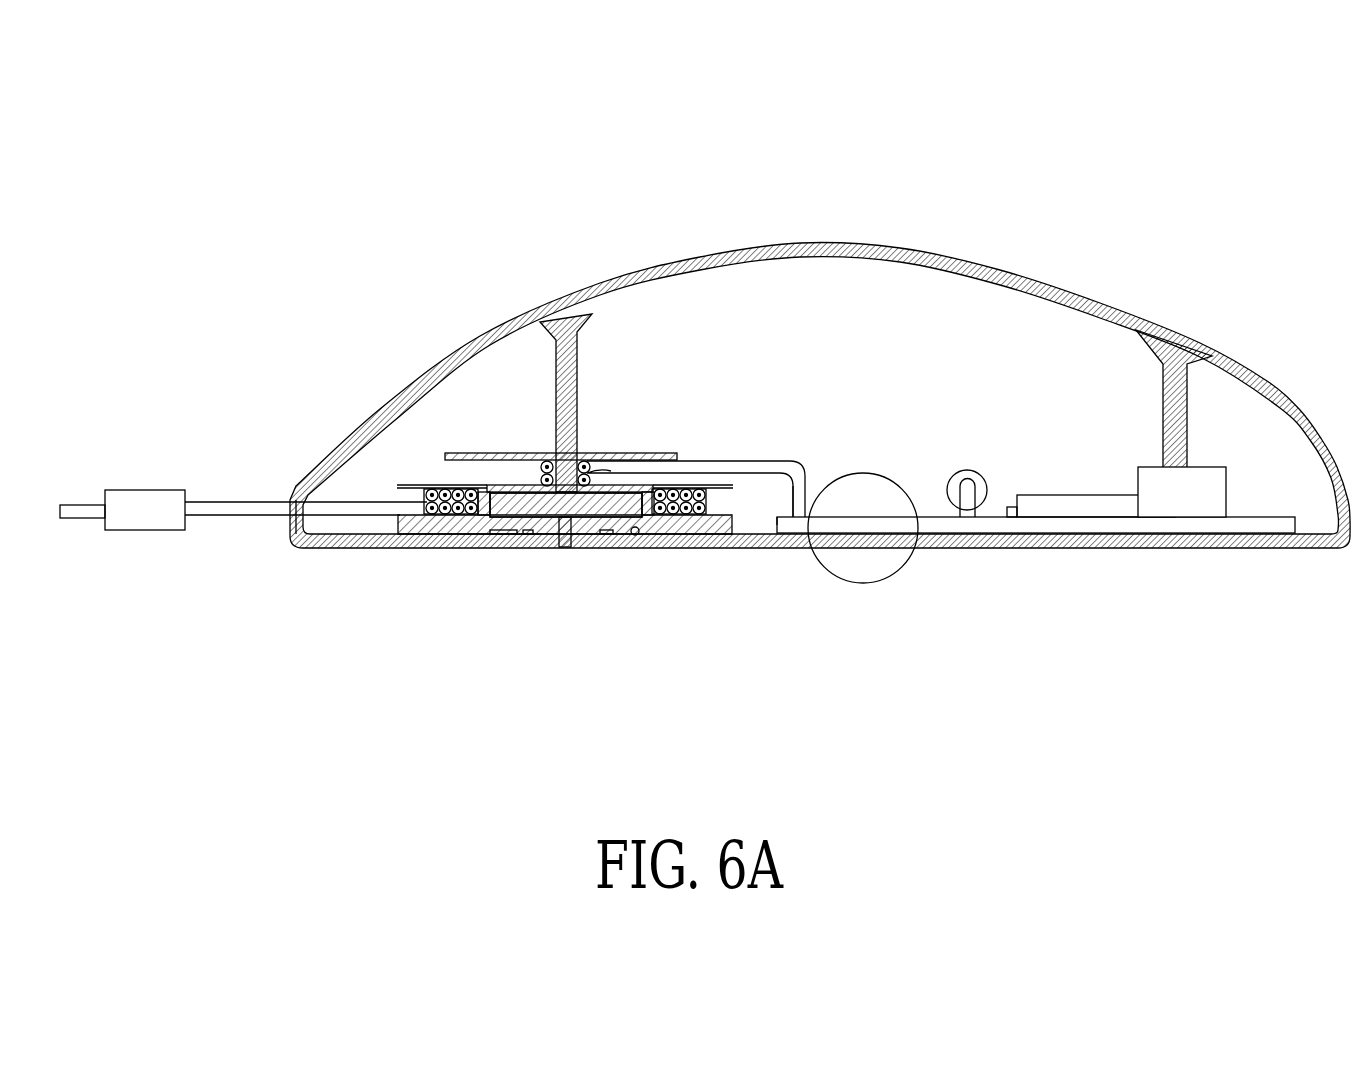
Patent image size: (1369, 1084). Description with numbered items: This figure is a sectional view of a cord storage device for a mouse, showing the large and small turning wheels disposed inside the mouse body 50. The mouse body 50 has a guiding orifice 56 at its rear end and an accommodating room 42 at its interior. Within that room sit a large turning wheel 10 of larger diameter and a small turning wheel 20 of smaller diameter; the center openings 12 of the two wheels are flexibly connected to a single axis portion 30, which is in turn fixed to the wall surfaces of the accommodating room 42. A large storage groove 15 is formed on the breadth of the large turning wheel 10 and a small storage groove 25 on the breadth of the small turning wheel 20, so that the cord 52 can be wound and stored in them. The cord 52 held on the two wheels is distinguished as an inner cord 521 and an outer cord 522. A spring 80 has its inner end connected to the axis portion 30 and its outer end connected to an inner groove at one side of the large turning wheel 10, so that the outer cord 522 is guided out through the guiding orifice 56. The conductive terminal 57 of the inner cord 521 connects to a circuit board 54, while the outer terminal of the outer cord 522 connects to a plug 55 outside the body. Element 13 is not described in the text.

The mouse body 50 is at (947, 260).
The axis portion 30 is at (573, 347).
The small storage groove 25 is at (493, 470).
The middle plate 13 is at (425, 488).
The small turning wheel 20 is at (582, 462).
The large storage groove 15 is at (403, 507).
The outer cord 522 is at (320, 510).
The large turning wheel 10 is at (481, 506).
The spring 80 is at (537, 505).
The center openings 12 is at (558, 477).
The inner cord 521 is at (700, 462).
The conductive terminal 57 is at (797, 502).
The accommodating room 42 is at (845, 408).
The circuit board 54 is at (940, 520).
The plug 55 is at (160, 505).
The cord 52 is at (232, 477).
The guiding orifice 56 is at (298, 527).